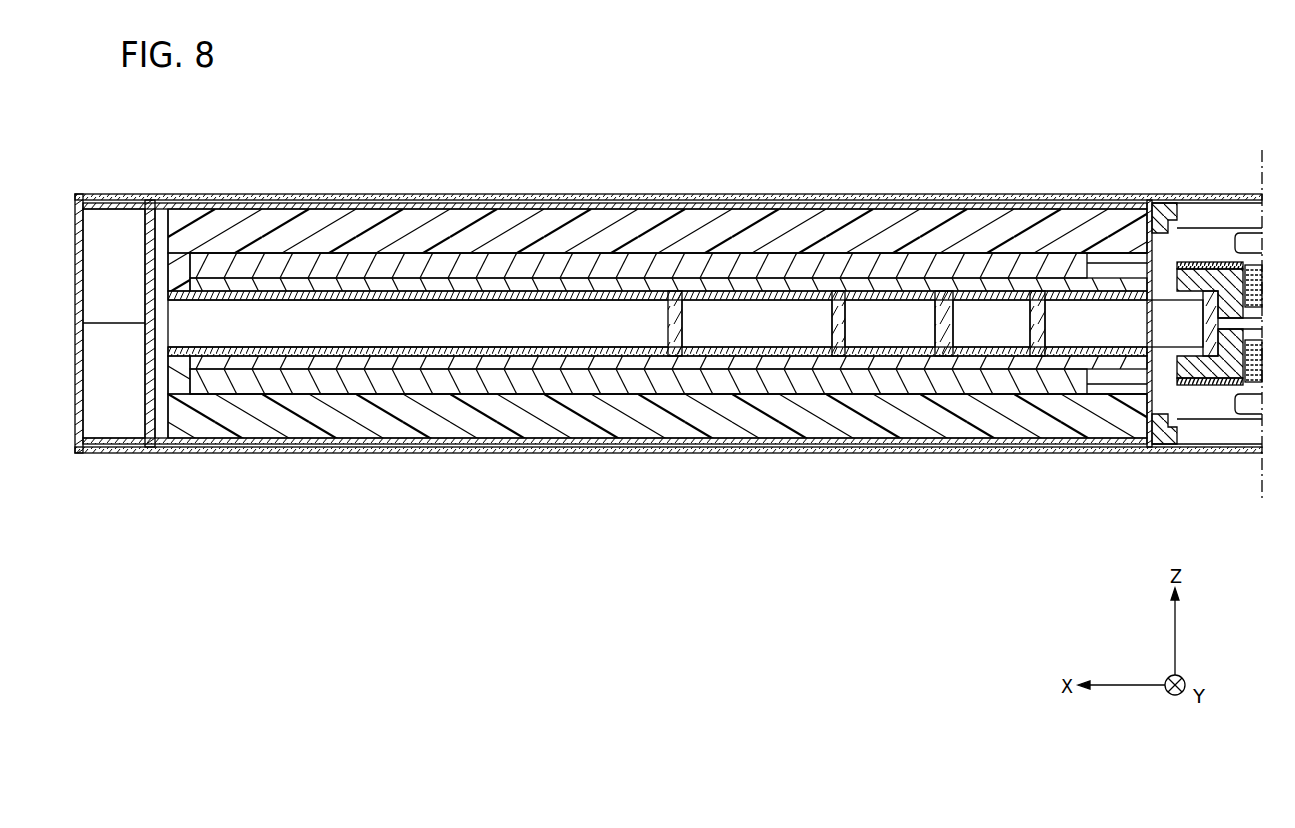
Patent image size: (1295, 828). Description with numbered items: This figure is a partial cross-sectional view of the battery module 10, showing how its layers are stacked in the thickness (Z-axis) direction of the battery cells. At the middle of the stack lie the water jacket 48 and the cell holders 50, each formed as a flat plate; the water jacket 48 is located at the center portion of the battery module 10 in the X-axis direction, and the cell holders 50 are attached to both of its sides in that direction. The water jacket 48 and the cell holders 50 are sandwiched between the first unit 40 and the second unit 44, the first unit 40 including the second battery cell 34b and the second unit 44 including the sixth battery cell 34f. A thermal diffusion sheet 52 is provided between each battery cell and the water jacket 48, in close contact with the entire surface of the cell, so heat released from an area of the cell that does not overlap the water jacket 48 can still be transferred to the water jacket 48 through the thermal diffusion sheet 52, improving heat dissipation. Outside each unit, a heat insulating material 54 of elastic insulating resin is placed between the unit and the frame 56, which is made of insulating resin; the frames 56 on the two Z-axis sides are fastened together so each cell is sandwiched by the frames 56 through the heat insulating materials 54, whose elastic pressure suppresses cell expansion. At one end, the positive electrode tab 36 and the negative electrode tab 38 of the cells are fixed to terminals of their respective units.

The battery module 10 is at (419, 94).
The sixth battery cell 34f is at (683, 256).
The second battery cell 34b is at (681, 392).
The positive electrode tab 36 is at (1197, 256).
The negative electrode tab 38 is at (1221, 258).
The first unit 40 is at (596, 394).
The second unit 44 is at (596, 253).
The water jacket 48 is at (862, 352).
The cell holder 50 is at (285, 353).
The thermal diffusion sheet 52 is at (552, 290).
The heat insulating material 54 is at (471, 216).
The frame 56 is at (337, 207).